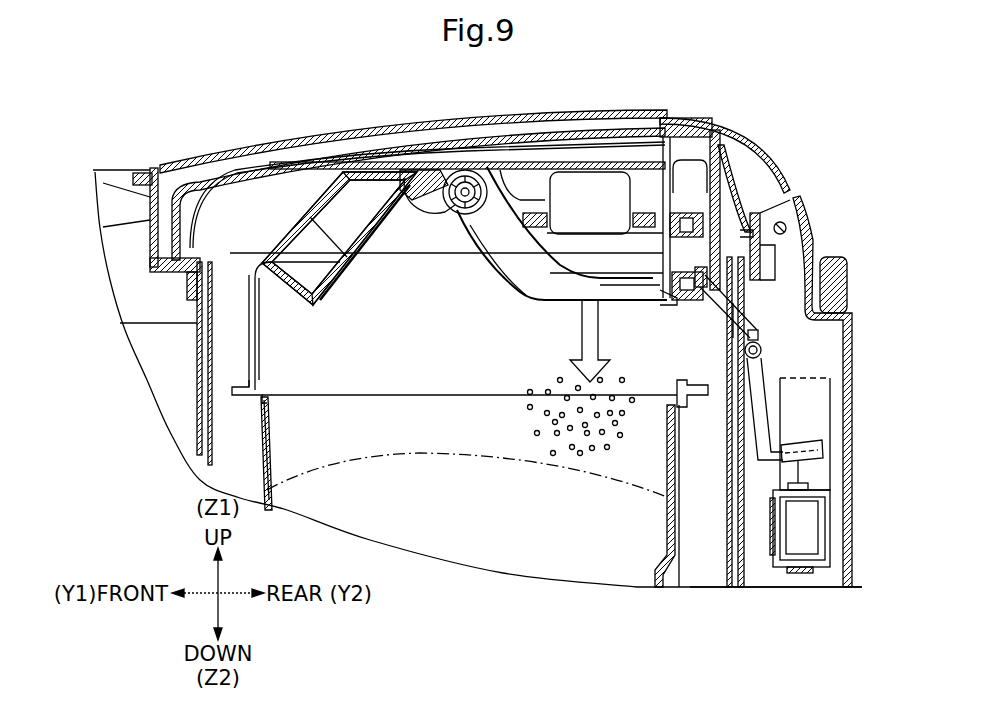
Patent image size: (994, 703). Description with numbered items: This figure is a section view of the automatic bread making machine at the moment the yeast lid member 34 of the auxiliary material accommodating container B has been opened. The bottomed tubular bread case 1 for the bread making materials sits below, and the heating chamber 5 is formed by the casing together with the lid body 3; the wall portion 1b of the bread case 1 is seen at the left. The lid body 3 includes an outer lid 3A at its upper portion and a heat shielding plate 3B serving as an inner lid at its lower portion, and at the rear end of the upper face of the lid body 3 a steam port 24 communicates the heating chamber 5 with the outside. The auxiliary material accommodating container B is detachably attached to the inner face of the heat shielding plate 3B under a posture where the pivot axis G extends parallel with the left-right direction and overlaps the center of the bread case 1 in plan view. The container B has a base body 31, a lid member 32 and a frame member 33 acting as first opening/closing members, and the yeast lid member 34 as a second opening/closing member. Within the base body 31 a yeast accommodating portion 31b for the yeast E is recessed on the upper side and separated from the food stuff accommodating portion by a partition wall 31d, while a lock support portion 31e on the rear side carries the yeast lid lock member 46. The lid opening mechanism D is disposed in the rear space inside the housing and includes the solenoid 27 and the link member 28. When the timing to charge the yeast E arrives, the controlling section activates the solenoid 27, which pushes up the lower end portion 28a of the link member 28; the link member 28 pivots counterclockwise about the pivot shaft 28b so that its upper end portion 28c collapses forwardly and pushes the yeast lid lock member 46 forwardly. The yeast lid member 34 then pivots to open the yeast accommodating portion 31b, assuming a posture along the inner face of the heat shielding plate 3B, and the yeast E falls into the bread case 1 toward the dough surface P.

The bread case 1 is at (258, 480).
The wall portion 1b is at (267, 450).
The lid body 3 is at (347, 125).
The outer lid 3A is at (263, 140).
The heat shielding plate 3B is at (233, 172).
The heating chamber 5 is at (692, 558).
The steam port 24 is at (693, 117).
The solenoid 27 is at (810, 527).
The link member 28 is at (770, 370).
The lower end portion 28a is at (820, 450).
The pivot shaft 28b is at (760, 350).
The upper end portion 28c is at (705, 290).
The base body 31 is at (510, 177).
The yeast accommodating portion 31b is at (565, 175).
The partition wall 31d is at (583, 242).
The lock support portion 31e is at (677, 300).
The lid member 32 is at (527, 283).
The frame member 33 is at (543, 255).
The yeast lid member 34 is at (330, 283).
The yeast lid lock member 46 is at (700, 302).
The pivot axis G is at (467, 170).
The auxiliary material accommodating container B is at (417, 235).
The lid opening mechanism D is at (800, 407).
The load surface P is at (400, 455).
The yeast E is at (617, 450).